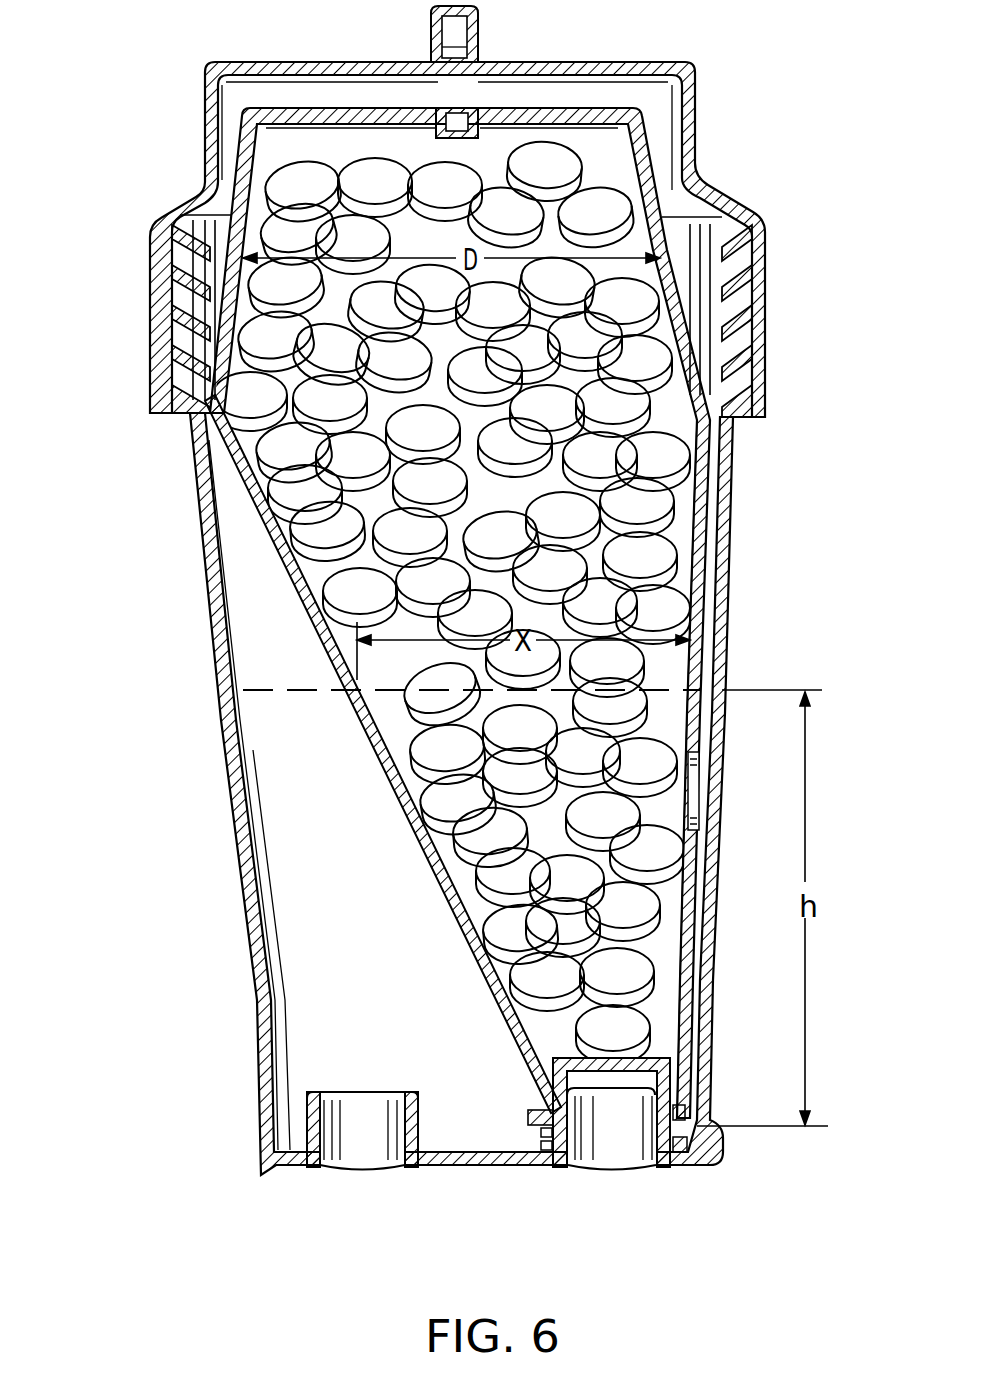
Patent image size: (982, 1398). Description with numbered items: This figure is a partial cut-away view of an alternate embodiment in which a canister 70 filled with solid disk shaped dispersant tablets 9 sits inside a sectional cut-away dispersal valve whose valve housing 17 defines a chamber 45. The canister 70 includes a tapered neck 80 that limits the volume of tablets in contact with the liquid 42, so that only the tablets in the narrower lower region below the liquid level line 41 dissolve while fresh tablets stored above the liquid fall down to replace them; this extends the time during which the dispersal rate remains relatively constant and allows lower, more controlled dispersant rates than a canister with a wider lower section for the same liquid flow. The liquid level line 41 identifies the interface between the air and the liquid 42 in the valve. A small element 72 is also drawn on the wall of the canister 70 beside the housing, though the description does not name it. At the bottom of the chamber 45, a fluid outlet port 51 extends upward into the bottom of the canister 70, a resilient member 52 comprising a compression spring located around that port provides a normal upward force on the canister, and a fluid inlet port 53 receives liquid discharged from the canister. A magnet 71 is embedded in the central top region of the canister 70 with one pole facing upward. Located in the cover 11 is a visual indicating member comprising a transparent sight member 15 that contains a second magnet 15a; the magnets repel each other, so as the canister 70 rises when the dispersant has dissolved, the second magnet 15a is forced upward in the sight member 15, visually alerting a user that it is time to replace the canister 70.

The cover 11 is at (697, 152).
The transparent sight member 15 is at (480, 33).
The second magnet 15a is at (438, 42).
The magnet 71 is at (458, 108).
The valve housing 17 is at (728, 622).
The canister 70 is at (725, 527).
The detent clip 72 is at (702, 773).
The liquid 42 is at (668, 720).
The liquid level line 41 is at (258, 692).
The chamber 45 is at (237, 532).
The tapered neck 80 is at (300, 592).
The dispersant tablets 9 is at (490, 836).
The fluid outlet port 51 is at (618, 1158).
The resilient member 52 is at (680, 1143).
The fluid inlet port 53 is at (368, 1160).